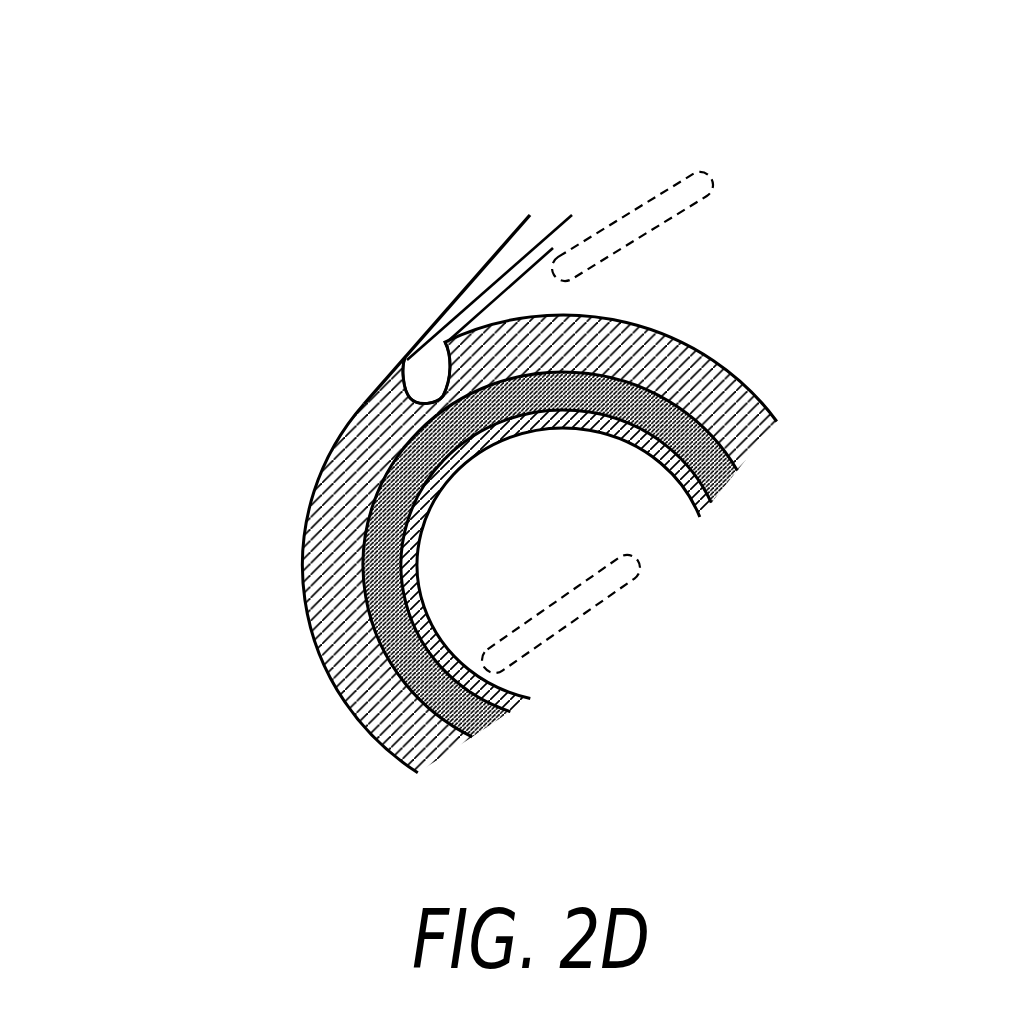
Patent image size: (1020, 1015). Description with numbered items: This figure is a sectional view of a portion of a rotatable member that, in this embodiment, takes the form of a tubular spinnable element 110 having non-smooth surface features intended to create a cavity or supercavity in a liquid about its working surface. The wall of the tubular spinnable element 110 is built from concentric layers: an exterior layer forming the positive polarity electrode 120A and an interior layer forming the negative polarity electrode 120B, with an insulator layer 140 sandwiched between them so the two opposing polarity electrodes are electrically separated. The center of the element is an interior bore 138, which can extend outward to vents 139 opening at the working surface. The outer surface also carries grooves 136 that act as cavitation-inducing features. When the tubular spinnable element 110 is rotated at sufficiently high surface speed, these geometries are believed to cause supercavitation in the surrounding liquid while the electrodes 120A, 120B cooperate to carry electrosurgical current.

The tubular spinnable element 110 is at (346, 72).
The positive polarity electrode 120A is at (300, 563).
The negative polarity electrode 120B is at (427, 514).
The groove 136 is at (428, 362).
The interior bore 138 is at (453, 610).
The vent 139 is at (653, 215).
The insulator layer 140 is at (417, 685).